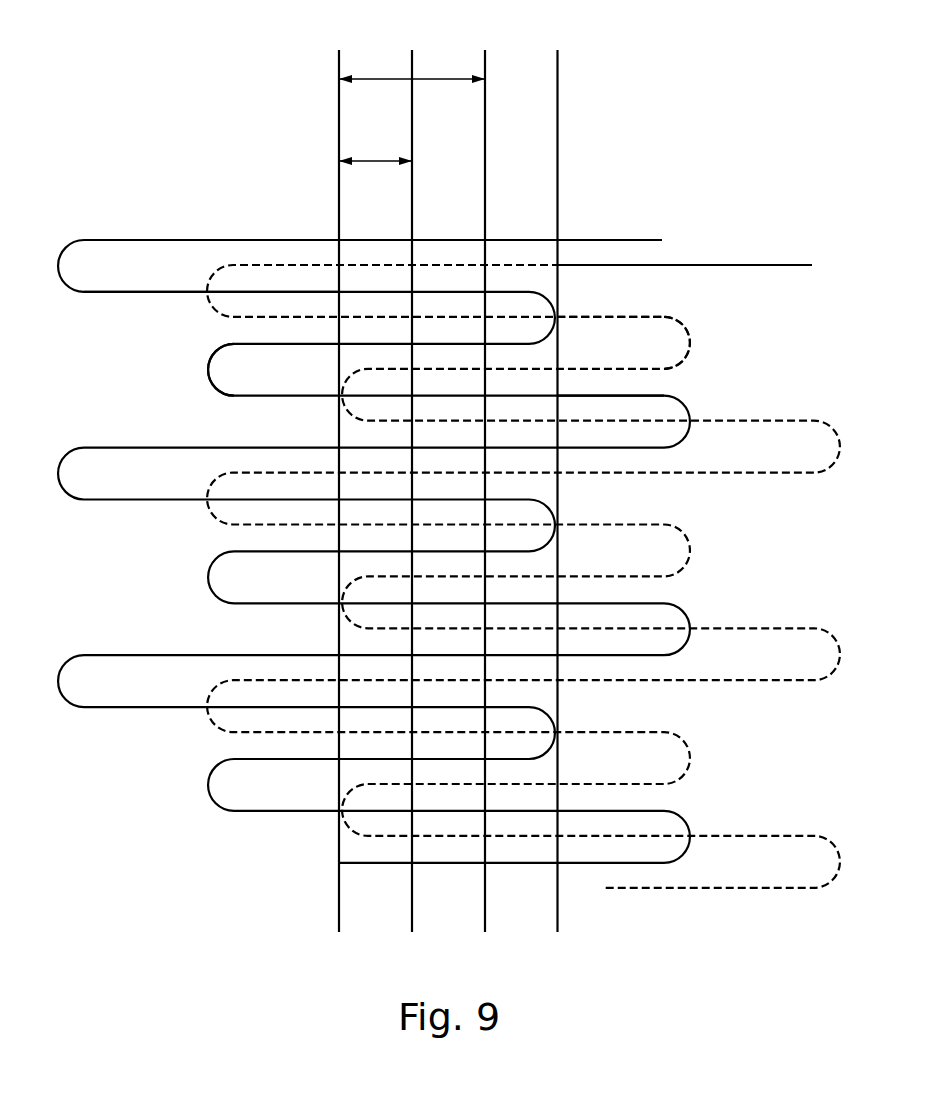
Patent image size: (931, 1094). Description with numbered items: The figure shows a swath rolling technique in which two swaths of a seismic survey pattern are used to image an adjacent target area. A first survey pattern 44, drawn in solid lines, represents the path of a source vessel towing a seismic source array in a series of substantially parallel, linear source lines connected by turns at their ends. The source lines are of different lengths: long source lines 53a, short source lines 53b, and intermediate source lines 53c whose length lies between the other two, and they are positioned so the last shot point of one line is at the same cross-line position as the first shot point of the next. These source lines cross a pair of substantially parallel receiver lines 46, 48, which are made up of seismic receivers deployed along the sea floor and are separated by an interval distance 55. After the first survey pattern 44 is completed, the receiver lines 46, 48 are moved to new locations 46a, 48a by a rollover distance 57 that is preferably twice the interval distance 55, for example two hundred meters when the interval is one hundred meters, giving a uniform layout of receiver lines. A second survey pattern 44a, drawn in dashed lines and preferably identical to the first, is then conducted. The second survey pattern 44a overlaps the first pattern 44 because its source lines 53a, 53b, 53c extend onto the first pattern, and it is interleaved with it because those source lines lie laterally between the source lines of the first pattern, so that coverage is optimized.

The survey pattern 44 is at (165, 222).
The second survey pattern 44a is at (780, 242).
The receiver line 46 is at (338, 97).
The new receiver line location 46a is at (485, 67).
The receiver line 48 is at (412, 62).
The new receiver line location 48a is at (558, 115).
The long source line 53a is at (308, 238).
The short source line 53b is at (250, 342).
The intermediate source line 53c is at (135, 292).
The interval distance 55 is at (372, 160).
The rollover distance 57 is at (390, 77).